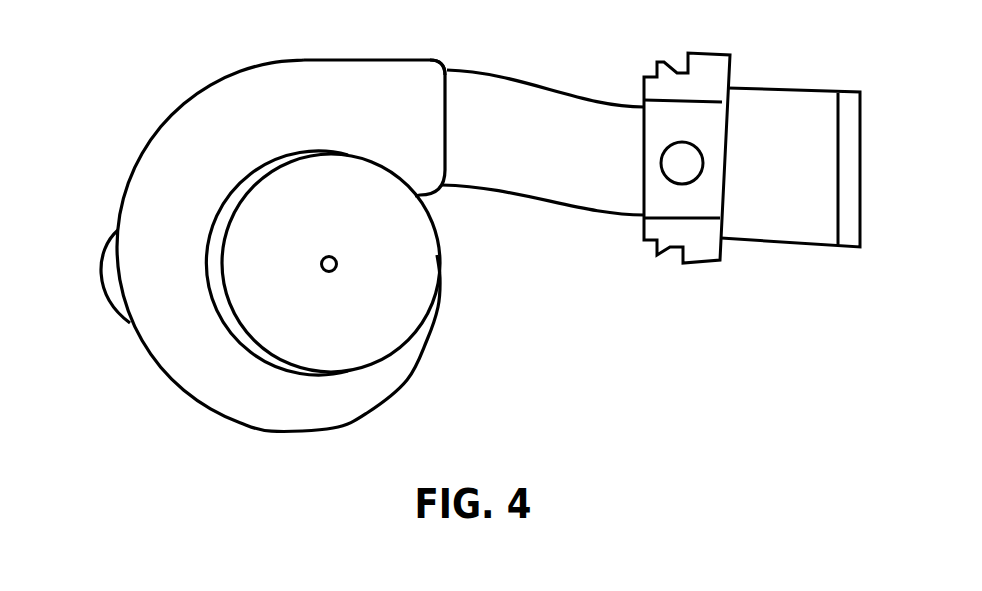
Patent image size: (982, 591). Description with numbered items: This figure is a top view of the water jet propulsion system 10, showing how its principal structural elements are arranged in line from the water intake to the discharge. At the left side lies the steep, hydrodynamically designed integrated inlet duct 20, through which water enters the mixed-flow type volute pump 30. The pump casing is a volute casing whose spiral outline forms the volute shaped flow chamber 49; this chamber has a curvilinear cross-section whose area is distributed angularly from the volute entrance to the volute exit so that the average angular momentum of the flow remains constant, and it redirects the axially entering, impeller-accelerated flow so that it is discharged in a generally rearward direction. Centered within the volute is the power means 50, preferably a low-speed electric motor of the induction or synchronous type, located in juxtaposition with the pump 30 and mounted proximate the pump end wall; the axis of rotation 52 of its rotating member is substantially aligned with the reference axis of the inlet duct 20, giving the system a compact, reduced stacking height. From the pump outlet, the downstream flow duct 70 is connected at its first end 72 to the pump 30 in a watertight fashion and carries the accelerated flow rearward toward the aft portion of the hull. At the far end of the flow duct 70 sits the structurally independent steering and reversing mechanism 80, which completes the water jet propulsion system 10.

The water jet propulsion system 10 is at (105, 87).
The integrated inlet duct 20 is at (100, 285).
The volute pump 30 is at (262, 478).
The volute shaped flow chamber 49 is at (283, 121).
The power means 50 is at (311, 339).
The axis of rotation 52 is at (337, 257).
The downstream flow duct 70 is at (528, 148).
The first end 72 is at (447, 68).
The steering and reversing mechanism 80 is at (771, 174).